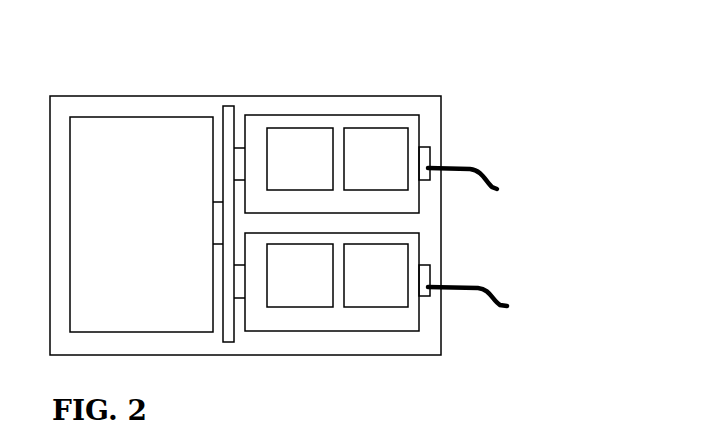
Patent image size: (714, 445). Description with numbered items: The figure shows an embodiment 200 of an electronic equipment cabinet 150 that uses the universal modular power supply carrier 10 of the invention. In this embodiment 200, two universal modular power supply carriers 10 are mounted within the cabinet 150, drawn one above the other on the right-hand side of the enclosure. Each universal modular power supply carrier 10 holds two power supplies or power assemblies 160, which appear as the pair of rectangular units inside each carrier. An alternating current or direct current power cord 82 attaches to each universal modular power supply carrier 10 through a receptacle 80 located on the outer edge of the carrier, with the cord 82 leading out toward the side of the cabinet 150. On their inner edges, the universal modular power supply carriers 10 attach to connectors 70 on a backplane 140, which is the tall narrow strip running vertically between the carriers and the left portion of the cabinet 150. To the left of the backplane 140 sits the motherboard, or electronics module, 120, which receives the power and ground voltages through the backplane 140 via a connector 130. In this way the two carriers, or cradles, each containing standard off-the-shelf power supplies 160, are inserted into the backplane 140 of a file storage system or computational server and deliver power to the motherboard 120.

The embodiment 200 is at (540, 51).
The cabinet 150 is at (408, 96).
The motherboard 120 is at (150, 117).
The backplane 140 is at (224, 106).
The connector 130 is at (213, 223).
The connectors 70 is at (247, 155).
The universal modular power supply carrier 10 is at (333, 115).
The power supply 160 is at (299, 307).
The receptacle 80 is at (430, 147).
The power cord 82 is at (477, 168).